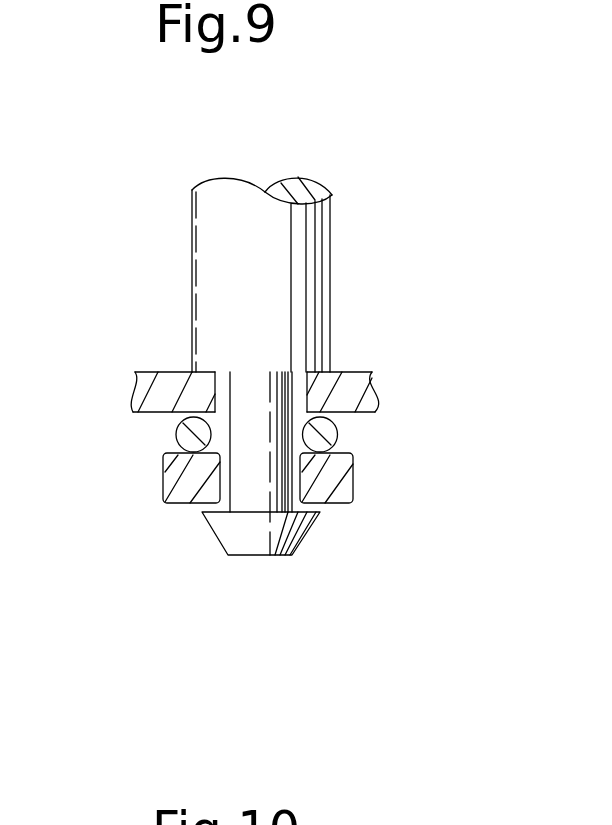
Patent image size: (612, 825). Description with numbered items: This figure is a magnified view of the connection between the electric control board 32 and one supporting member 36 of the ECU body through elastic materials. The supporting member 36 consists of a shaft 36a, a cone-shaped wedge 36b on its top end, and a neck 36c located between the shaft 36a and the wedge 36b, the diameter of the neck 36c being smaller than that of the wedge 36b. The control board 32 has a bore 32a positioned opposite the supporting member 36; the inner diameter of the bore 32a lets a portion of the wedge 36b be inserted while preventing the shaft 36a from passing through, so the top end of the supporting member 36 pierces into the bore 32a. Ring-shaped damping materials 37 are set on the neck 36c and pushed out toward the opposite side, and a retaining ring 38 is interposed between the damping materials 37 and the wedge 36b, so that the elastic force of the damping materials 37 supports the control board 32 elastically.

The control board 32 is at (219, 338).
The bore 32a is at (216, 373).
The supporting member 36 is at (325, 345).
The shaft 36a is at (322, 256).
The wedge 36b is at (298, 530).
The neck 36c is at (263, 383).
The damping materials 37 is at (338, 436).
The retaining ring 38 is at (353, 479).